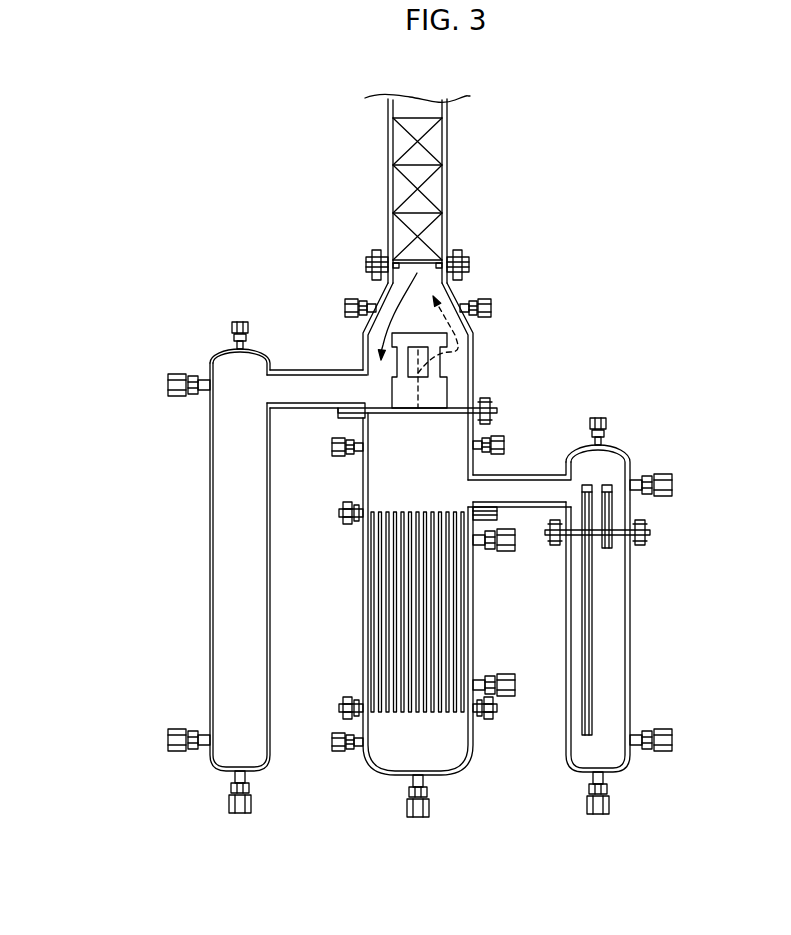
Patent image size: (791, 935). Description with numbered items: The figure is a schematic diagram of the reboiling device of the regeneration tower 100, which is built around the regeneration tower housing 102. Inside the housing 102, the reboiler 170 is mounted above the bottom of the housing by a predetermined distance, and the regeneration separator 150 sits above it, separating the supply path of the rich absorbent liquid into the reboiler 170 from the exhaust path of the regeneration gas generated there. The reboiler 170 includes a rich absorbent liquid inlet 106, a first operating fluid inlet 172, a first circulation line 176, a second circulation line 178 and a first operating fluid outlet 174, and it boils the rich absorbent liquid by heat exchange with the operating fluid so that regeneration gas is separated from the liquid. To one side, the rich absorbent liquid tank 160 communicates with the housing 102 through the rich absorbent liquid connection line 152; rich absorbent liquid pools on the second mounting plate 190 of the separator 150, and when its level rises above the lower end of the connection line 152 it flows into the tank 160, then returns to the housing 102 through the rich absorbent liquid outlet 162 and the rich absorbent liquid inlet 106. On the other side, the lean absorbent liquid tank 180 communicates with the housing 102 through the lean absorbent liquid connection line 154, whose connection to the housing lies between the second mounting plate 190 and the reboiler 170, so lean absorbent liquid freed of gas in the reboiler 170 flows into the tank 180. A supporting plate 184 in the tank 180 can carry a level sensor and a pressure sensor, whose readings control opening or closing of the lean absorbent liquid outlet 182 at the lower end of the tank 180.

The regeneration tower 100 is at (290, 265).
The regeneration tower housing 102 is at (448, 234).
The rich absorbent liquid inlet 106 is at (418, 818).
The regeneration separator 150 is at (462, 367).
The rich absorbent liquid connection line 152 is at (318, 370).
The lean absorbent liquid connection line 154 is at (560, 475).
The rich absorbent liquid tank 160 is at (200, 548).
The rich absorbent liquid outlet 162 is at (240, 815).
The reboiler 170 is at (495, 603).
The first operating fluid inlet 172 is at (515, 545).
The first operating fluid outlet 174 is at (515, 688).
The first circulation line 176 is at (437, 512).
The second circulation line 178 is at (460, 515).
The lean absorbent liquid tank 180 is at (640, 450).
The lean absorbent liquid outlet 182 is at (598, 816).
The supporting plate 184 is at (630, 513).
The second mounting plate 190 is at (455, 410).